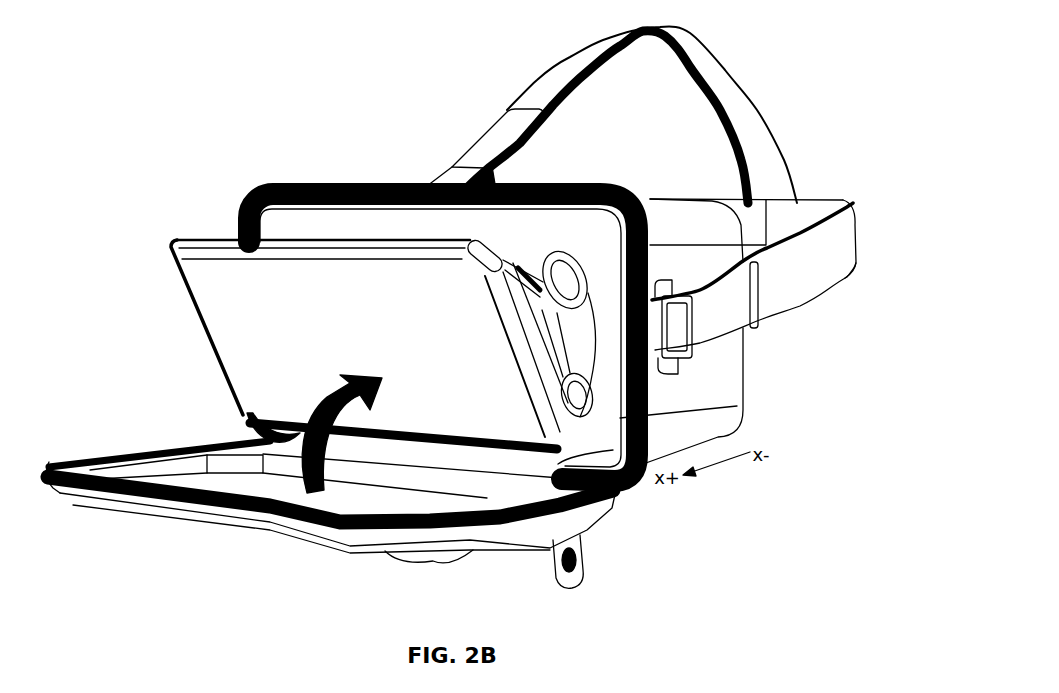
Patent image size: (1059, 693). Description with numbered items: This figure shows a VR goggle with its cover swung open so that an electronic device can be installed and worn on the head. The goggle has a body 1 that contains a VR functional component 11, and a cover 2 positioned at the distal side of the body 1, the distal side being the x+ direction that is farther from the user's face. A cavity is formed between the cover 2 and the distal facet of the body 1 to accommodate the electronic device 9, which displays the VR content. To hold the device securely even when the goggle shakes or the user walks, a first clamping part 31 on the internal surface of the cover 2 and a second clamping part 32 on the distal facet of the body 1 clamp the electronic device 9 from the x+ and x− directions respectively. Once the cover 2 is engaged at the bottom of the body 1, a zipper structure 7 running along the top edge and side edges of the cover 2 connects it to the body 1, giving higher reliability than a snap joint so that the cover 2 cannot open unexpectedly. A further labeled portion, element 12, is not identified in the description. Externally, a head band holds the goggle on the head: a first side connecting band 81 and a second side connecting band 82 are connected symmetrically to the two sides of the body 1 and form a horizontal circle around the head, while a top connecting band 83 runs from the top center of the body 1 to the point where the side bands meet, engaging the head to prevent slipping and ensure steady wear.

The body 1 is at (341, 178).
The cover 2 is at (470, 560).
The zipper structure 7 is at (248, 202).
The electronic device 9 is at (223, 307).
The VR functional component 11 is at (597, 432).
The housing side portion 12 is at (747, 393).
The first clamping part 31 is at (233, 510).
The second clamping part 32 is at (558, 275).
The first side connecting band 81 is at (743, 213).
The second side connecting band 82 is at (788, 273).
The top connecting band 83 is at (528, 100).